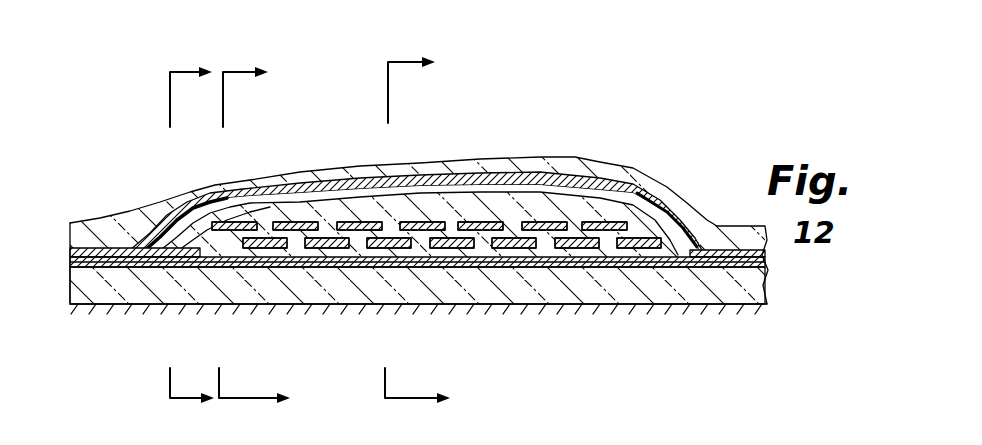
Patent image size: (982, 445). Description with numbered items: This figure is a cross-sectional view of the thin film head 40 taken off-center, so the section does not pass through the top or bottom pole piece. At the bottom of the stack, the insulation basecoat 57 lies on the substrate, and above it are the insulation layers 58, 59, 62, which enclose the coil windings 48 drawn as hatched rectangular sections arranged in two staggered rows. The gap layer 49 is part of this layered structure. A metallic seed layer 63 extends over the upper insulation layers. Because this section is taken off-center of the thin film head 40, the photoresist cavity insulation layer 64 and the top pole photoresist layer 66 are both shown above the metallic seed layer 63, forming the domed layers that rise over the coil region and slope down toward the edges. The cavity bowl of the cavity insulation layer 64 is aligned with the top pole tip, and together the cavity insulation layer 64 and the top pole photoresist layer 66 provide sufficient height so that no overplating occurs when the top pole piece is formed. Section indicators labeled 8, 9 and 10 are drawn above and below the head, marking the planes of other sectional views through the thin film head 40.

The thin film head 40 is at (294, 320).
The coil windings 48 is at (634, 247).
The gap layer 49 is at (697, 240).
The insulation basecoat 57 is at (160, 298).
The insulation layer 58 is at (478, 243).
The insulation layer 59 is at (293, 250).
The insulation layer 62 is at (430, 208).
The metallic seed layer 63 is at (708, 248).
The photoresist cavity insulation layer 64 is at (223, 212).
The top pole photoresist layer 66 is at (333, 175).
The section line 8- 8 is at (192, 213).
The section line 9- 9 is at (254, 213).
The section line 10- 10 is at (417, 210).